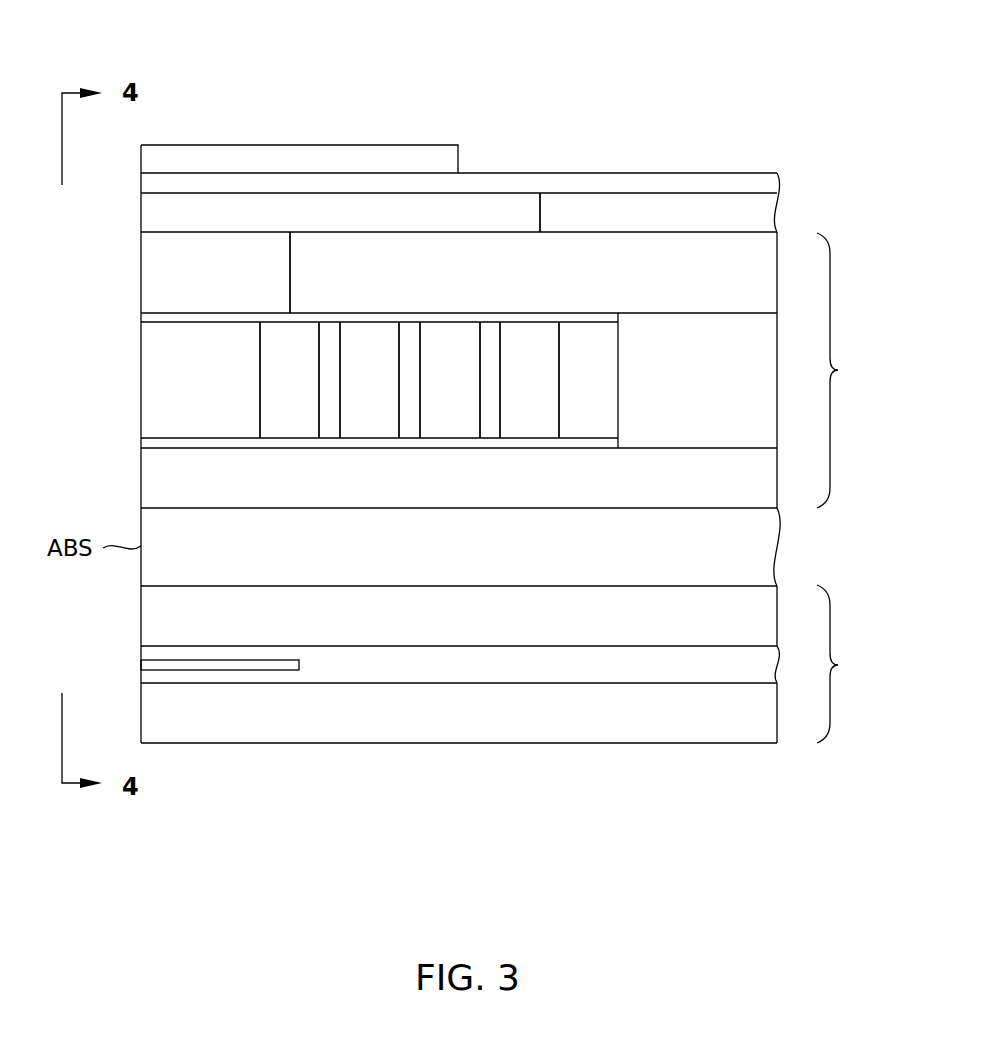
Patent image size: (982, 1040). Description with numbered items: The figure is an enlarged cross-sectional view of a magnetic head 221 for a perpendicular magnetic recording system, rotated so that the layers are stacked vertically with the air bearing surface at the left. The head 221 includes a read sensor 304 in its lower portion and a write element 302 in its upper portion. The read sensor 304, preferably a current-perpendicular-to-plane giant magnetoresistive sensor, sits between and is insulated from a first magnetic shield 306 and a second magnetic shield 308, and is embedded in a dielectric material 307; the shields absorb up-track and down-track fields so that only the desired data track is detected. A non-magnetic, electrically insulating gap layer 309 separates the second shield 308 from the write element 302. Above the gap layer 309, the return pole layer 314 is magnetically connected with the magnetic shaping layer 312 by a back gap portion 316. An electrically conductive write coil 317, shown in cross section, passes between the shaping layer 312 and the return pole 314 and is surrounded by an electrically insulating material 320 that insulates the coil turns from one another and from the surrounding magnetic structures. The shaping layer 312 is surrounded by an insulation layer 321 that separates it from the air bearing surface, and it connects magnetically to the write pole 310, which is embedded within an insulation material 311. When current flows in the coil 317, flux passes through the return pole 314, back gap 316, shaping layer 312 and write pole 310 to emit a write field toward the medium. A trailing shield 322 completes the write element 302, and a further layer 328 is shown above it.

The magnetic head 221 is at (507, 85).
The write element 302 is at (832, 270).
The read sensor 304 is at (299, 665).
The first magnetic shield 306 is at (388, 712).
The dielectric material 307 is at (647, 666).
The second magnetic shield 308 is at (390, 617).
The gap layer 309 is at (410, 545).
The write pole 310 is at (237, 213).
The insulation material 311 is at (665, 215).
The magnetic shaping layer 312 is at (398, 272).
The return pole layer 314 is at (395, 478).
The back gap portion 316 is at (128, 291).
The write coil 317 is at (312, 376).
The electrically insulating material 320 is at (510, 316).
The insulation layer 321 is at (170, 272).
The trailing shield 322 is at (437, 158).
The trailing shield 328 is at (348, 183).